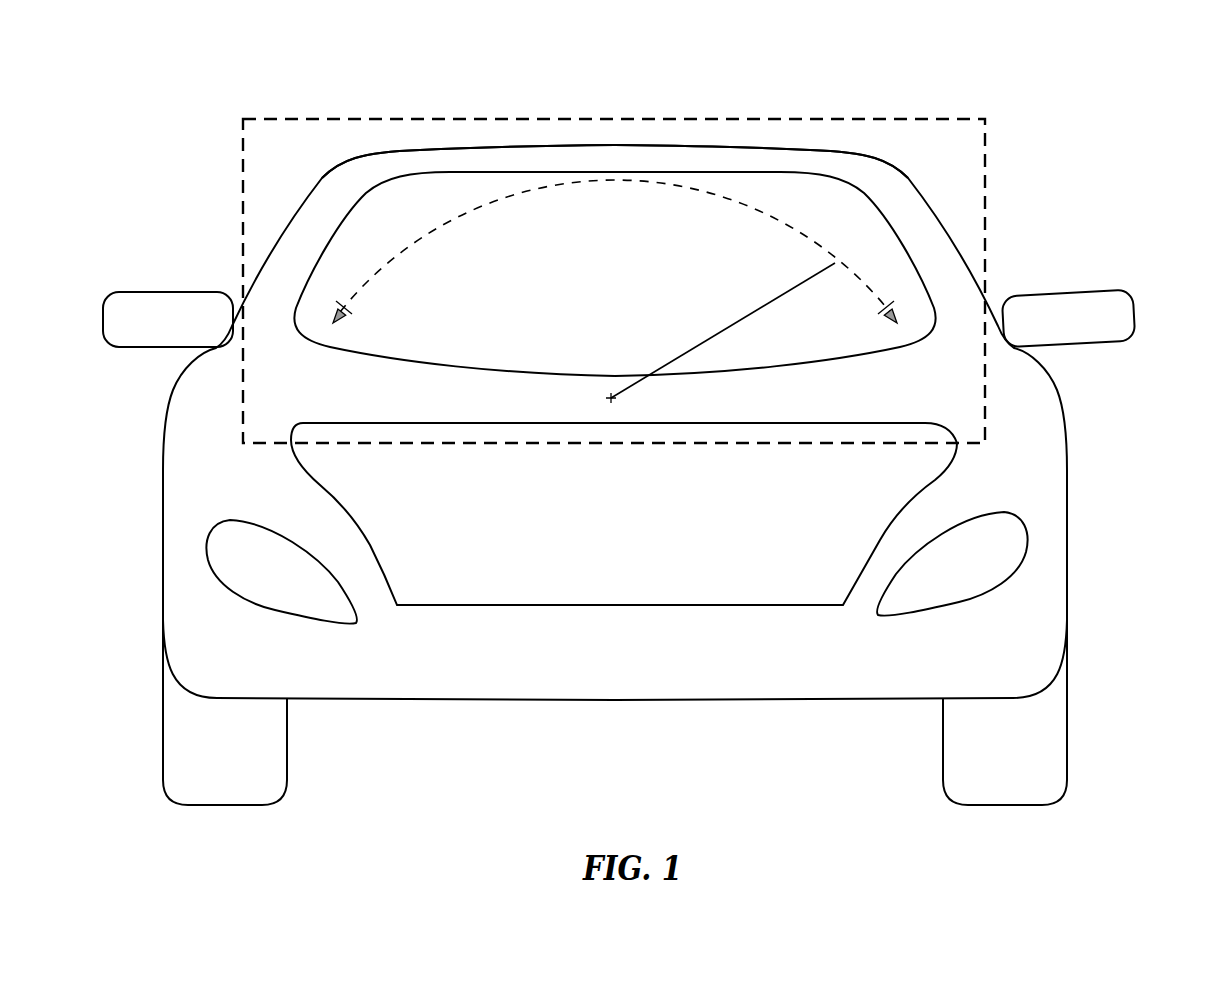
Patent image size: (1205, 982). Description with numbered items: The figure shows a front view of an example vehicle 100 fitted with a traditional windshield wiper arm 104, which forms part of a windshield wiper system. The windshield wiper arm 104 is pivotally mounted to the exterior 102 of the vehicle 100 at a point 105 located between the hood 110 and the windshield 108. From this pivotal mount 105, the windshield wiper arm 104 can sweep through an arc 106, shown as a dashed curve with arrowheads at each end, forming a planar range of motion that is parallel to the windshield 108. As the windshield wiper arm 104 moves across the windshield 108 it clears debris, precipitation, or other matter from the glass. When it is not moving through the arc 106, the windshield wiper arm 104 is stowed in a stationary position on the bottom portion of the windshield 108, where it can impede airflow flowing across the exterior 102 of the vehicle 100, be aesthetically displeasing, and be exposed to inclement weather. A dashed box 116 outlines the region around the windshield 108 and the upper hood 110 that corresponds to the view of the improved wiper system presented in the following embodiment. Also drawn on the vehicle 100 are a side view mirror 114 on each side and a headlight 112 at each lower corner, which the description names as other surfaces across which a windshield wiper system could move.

The vehicle 100 is at (621, 67).
The exterior 102 is at (334, 165).
The windshield wiper arm 104 is at (673, 353).
The pivotal mount point 105 is at (611, 398).
The arc 106 is at (763, 215).
The windshield 108 is at (892, 223).
The hood 110 is at (928, 422).
The headlight 112 is at (248, 522).
The side view mirror 114 is at (173, 294).
The dashed box 116 is at (492, 122).